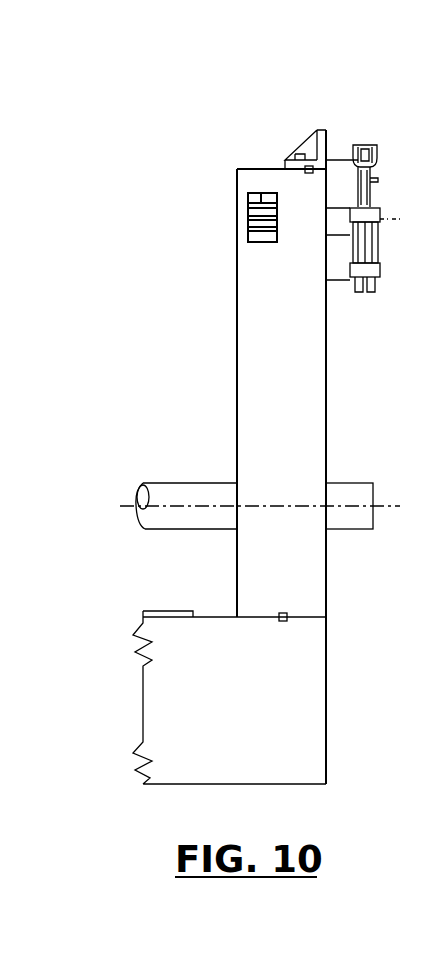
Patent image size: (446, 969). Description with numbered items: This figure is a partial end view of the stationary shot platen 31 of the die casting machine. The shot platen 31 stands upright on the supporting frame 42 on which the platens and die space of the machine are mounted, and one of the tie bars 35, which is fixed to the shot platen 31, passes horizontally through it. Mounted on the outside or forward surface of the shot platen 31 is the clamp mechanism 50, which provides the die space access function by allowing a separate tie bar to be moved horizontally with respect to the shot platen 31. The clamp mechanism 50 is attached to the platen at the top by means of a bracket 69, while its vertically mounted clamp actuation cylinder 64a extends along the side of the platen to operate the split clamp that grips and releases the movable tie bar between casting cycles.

The shot platen 31 is at (250, 369).
The tie bar 35 is at (191, 500).
The frame 42 is at (313, 709).
The clamp mechanism 50 is at (358, 118).
The clamp actuation cylinder 64a is at (378, 290).
The bracket 69 is at (318, 128).